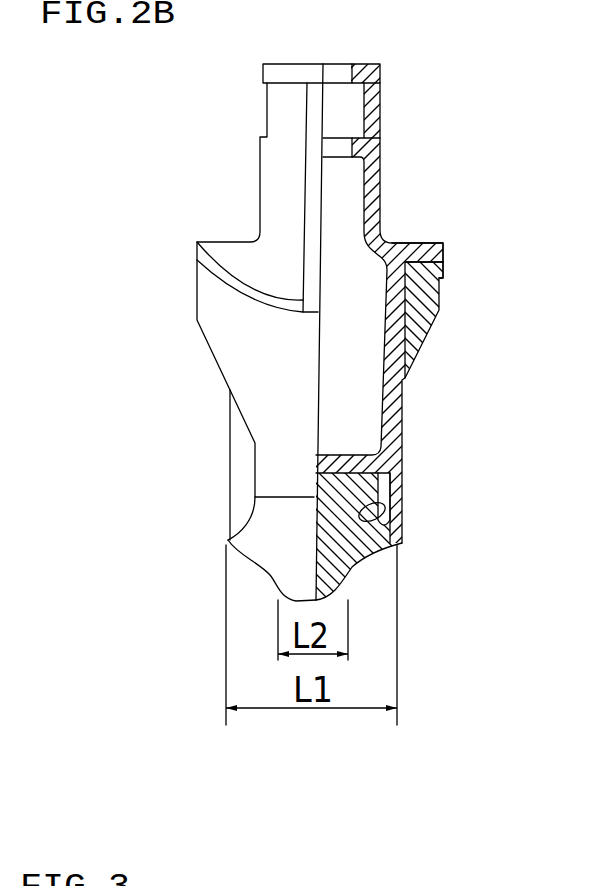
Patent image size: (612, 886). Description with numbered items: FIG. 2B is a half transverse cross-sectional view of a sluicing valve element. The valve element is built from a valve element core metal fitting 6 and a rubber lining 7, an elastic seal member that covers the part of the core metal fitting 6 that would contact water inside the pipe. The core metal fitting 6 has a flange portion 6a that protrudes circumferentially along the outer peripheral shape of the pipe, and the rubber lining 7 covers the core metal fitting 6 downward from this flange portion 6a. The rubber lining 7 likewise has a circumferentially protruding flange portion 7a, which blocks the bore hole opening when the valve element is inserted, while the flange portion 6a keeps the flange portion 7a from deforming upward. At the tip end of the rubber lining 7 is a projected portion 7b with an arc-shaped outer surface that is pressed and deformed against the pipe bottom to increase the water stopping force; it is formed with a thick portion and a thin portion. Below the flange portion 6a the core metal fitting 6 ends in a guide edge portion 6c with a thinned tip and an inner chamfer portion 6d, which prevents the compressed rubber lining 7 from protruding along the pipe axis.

The valve element core metal fitting 6 is at (380, 183).
The flange portion 6a is at (443, 252).
The guide edge portion 6c is at (385, 514).
The chamfer portion 6d is at (372, 500).
The rubber lining 7 is at (410, 346).
The flange portion 7a is at (443, 268).
The projected portion 7b is at (352, 585).